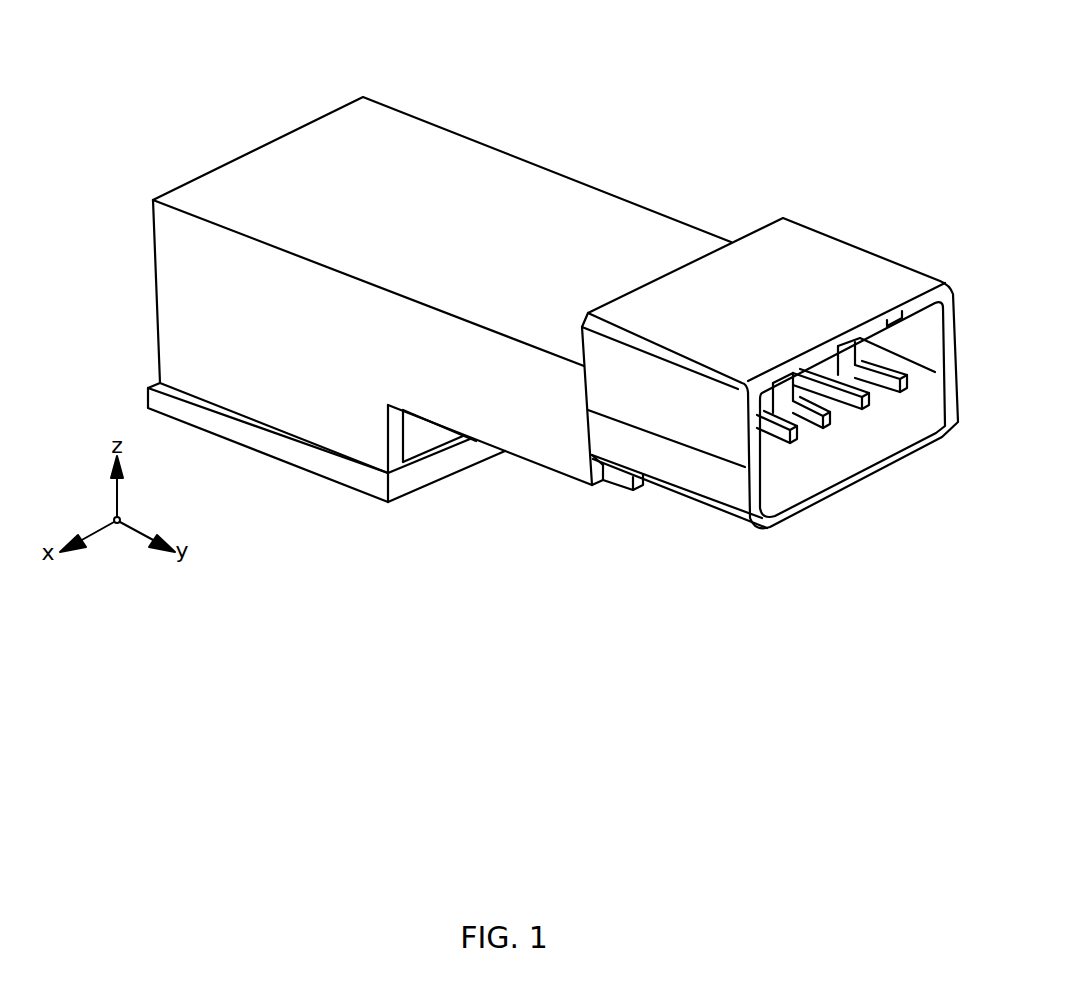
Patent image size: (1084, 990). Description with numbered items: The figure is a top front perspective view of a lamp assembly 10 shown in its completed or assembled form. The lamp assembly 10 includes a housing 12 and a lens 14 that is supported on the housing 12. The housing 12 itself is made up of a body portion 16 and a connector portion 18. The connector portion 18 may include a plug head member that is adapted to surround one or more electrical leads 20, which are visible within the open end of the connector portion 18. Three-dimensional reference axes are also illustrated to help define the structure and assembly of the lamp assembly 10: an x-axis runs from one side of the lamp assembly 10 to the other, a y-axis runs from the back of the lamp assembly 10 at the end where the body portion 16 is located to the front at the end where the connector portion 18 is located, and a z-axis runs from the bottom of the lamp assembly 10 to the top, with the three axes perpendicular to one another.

The lamp assembly 10 is at (757, 70).
The housing 12 is at (498, 136).
The lens 14 is at (288, 476).
The body portion 16 is at (252, 160).
The connector portion 18 is at (832, 242).
The electrical leads 20 is at (797, 437).